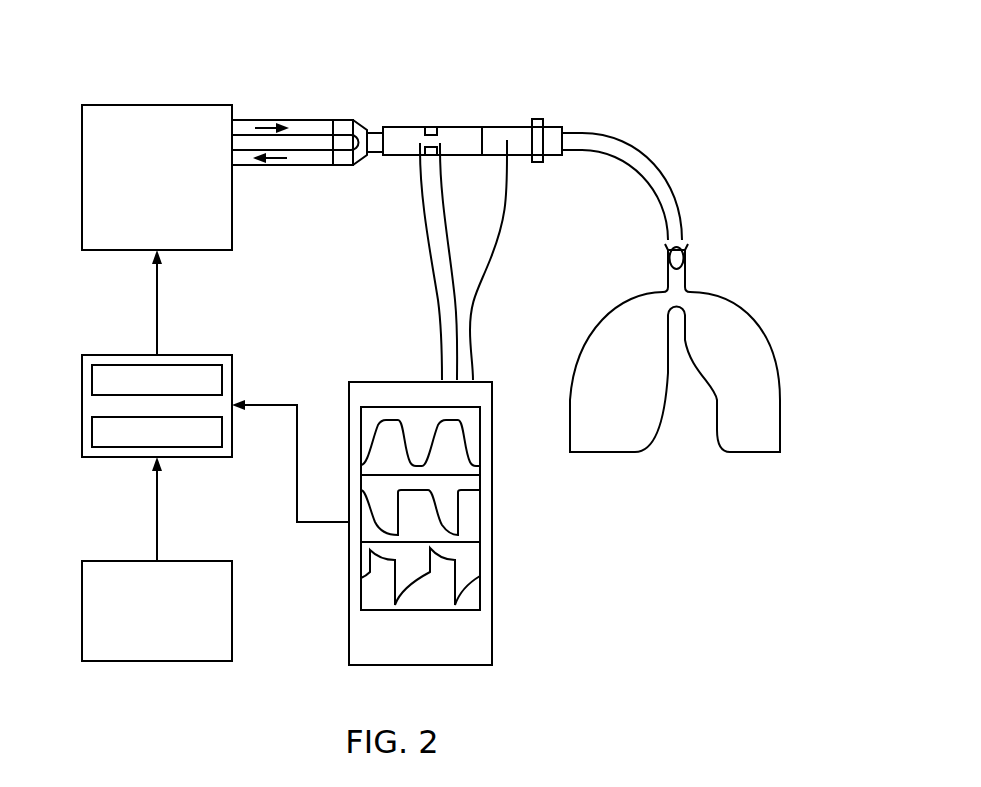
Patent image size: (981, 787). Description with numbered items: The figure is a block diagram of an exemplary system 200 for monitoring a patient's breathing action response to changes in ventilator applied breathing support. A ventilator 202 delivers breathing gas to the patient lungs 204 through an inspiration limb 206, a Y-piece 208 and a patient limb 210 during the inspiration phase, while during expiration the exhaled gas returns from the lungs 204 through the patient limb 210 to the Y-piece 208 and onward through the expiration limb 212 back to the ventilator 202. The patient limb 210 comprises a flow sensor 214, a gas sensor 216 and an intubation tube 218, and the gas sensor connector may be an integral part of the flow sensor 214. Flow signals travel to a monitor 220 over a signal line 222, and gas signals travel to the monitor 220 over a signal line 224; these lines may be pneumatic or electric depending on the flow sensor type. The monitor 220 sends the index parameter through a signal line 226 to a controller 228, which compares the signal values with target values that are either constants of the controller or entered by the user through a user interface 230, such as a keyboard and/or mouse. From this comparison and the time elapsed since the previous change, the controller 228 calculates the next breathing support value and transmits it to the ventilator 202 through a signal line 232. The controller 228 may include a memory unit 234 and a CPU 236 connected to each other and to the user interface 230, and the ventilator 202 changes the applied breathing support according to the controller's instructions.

The system 200 is at (655, 67).
The ventilator 202 is at (155, 104).
The patient lungs 204 is at (748, 305).
The inspiration limb 206 is at (291, 119).
The Y-piece 208 is at (362, 124).
The patient limb 210 is at (455, 126).
The expiration limb 212 is at (291, 167).
The flow sensor 214 is at (420, 160).
The gas sensor 216 is at (510, 126).
The intubation tube 218 is at (640, 152).
The monitor 220 is at (381, 381).
The signal line 222 is at (428, 270).
The signal line 224 is at (480, 277).
The signal line 226 is at (296, 488).
The controller 228 is at (117, 354).
The user interface 230 is at (112, 560).
The signal line 232 is at (159, 293).
The memory unit 234 is at (224, 380).
The CPU 236 is at (224, 433).